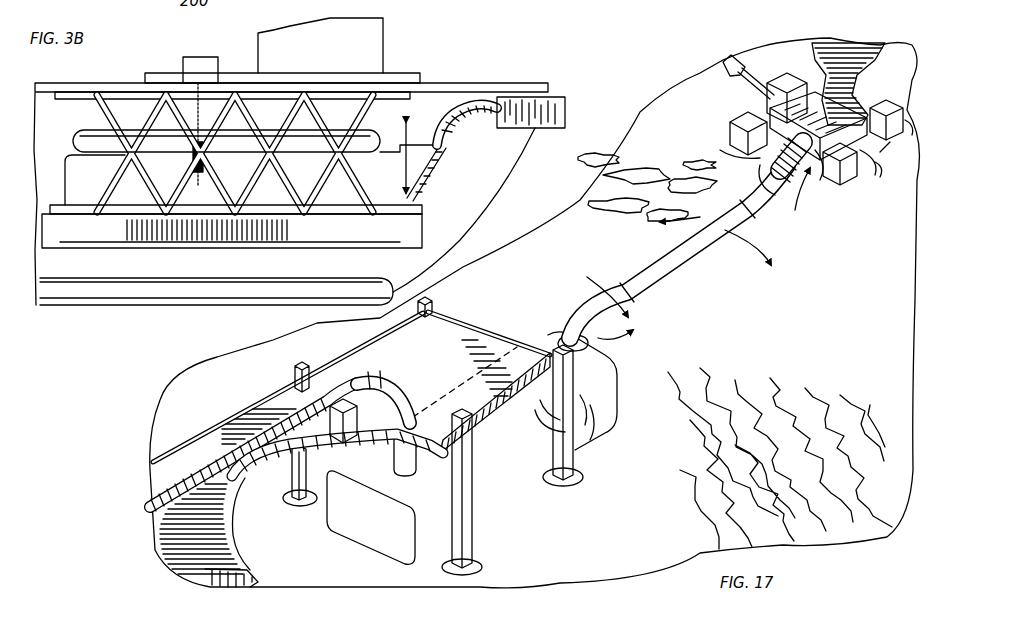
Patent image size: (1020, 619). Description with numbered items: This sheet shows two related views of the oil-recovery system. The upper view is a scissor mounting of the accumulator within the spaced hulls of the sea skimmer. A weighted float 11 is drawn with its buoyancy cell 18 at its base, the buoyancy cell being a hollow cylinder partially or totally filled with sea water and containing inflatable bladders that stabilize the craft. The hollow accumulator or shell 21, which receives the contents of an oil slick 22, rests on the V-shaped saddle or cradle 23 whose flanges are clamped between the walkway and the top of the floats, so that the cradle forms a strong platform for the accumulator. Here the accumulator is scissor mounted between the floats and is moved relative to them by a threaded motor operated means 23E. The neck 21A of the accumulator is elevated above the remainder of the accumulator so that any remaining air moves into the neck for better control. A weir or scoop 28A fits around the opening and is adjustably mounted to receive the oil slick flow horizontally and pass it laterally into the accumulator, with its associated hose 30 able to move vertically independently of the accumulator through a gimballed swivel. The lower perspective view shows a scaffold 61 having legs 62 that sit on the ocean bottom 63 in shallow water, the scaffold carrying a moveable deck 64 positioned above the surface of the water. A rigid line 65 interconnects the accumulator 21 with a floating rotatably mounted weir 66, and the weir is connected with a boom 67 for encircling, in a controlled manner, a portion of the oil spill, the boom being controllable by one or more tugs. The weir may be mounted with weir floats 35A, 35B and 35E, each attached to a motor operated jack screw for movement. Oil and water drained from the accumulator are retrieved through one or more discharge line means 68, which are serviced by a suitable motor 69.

In FIG. 3B, the weighted float 11 is at (500, 173).
In FIG. 3B, the buoyancy cell 18 is at (265, 282).
In FIG. 3B, the hollow accumulator or shell 21 is at (98, 182).
In FIG. 17, the hollow accumulator or shell 21 is at (360, 537).
In FIG. 3B, the neck of the accumulator 21A is at (443, 155).
In FIG. 17, the oil slick 22 is at (856, 43).
In FIG. 3B, the V-shaped saddle or cradle 23 is at (415, 224).
In FIG. 3B, the threaded motor operated means 23E is at (228, 50).
In FIG. 3B, the weir or scoop 28A is at (578, 115).
In FIG. 3B, the hose 30 is at (481, 100).
In FIG. 17, the weir float 35A is at (798, 88).
In FIG. 17, the weir float 35B is at (728, 124).
In FIG. 17, the base plate 35E is at (843, 187).
In FIG. 17, the scaffold 61 is at (333, 352).
In FIG. 17, the legs 62 is at (434, 305).
In FIG. 17, the ocean bottom 63 is at (563, 548).
In FIG. 17, the moveable deck 64 is at (440, 352).
In FIG. 17, the rigid line 65 is at (697, 252).
In FIG. 17, the floating rotatably mounted weir 66 is at (791, 186).
In FIG. 17, the boom 67 is at (731, 58).
In FIG. 17, the discharge line means 68 is at (216, 445).
In FIG. 17, the motor 69 is at (370, 392).